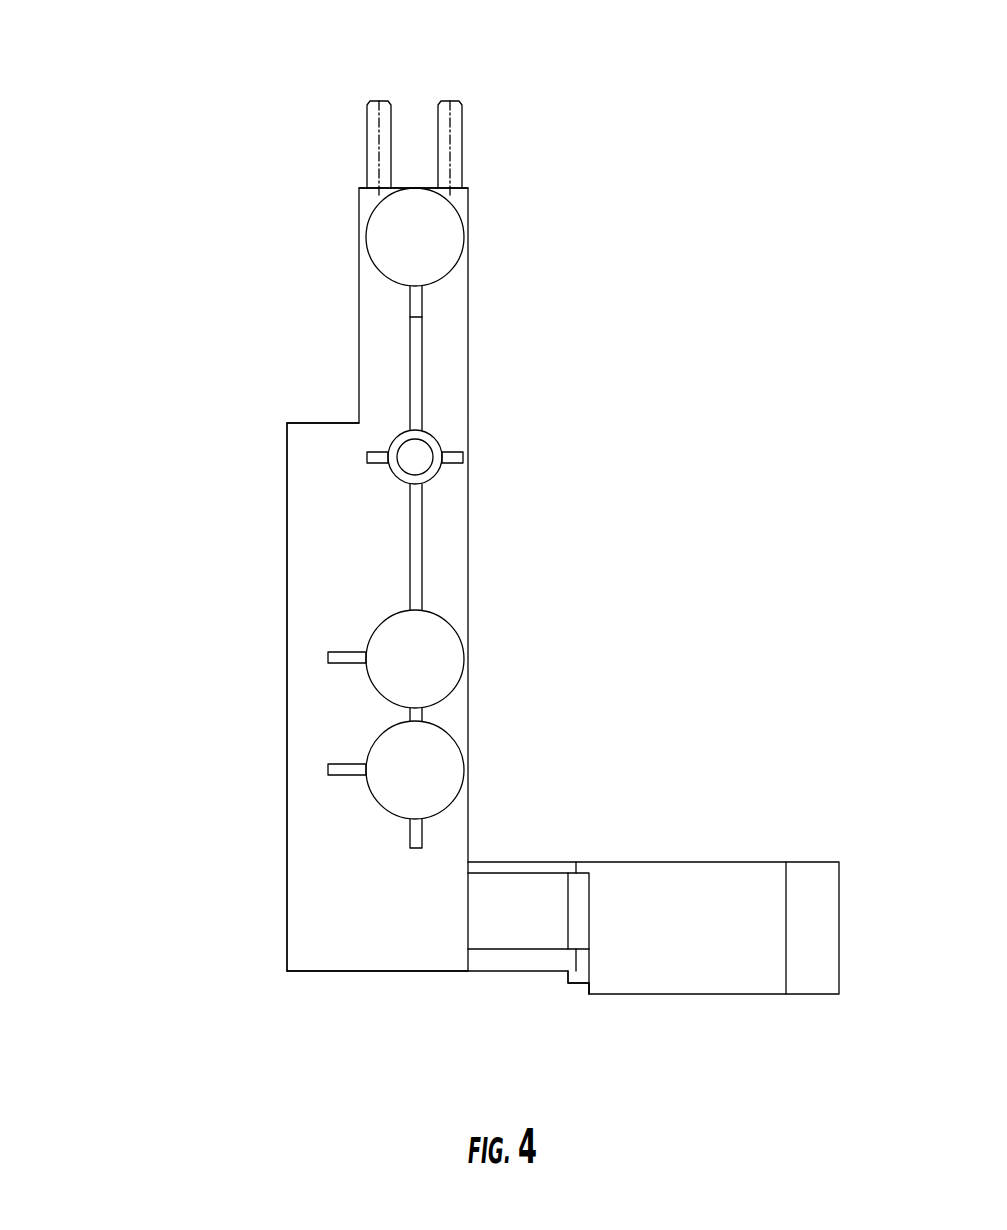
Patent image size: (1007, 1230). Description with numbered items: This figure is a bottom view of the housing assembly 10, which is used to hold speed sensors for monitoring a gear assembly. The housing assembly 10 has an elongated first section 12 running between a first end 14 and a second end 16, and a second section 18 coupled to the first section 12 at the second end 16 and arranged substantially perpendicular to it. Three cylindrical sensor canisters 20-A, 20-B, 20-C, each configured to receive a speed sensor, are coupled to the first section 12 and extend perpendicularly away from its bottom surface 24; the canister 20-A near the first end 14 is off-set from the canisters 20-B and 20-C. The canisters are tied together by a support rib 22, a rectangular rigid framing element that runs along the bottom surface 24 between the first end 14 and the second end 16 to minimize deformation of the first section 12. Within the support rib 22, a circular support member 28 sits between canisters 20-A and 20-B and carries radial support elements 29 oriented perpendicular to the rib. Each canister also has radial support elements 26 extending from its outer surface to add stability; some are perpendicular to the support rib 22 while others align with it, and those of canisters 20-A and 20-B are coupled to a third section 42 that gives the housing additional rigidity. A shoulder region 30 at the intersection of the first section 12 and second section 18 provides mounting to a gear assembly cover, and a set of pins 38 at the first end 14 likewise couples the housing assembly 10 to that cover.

The housing assembly 10 is at (94, 150).
The first section 12 is at (516, 532).
The first end 14 is at (316, 159).
The second end 16 is at (237, 965).
The second section 18 is at (728, 824).
The sensor canister 20-A is at (452, 250).
The sensor canister 20-B is at (450, 657).
The sensor canister 20-C is at (450, 775).
The support rib 22 is at (412, 369).
The bottom surface 24 is at (332, 958).
The radial support elements 26 is at (416, 310).
The circular support member 28 is at (432, 440).
The radial support elements 29 is at (463, 458).
The shoulder region 30 is at (522, 1014).
The set of pins 38 is at (410, 73).
The third section 42 is at (261, 452).